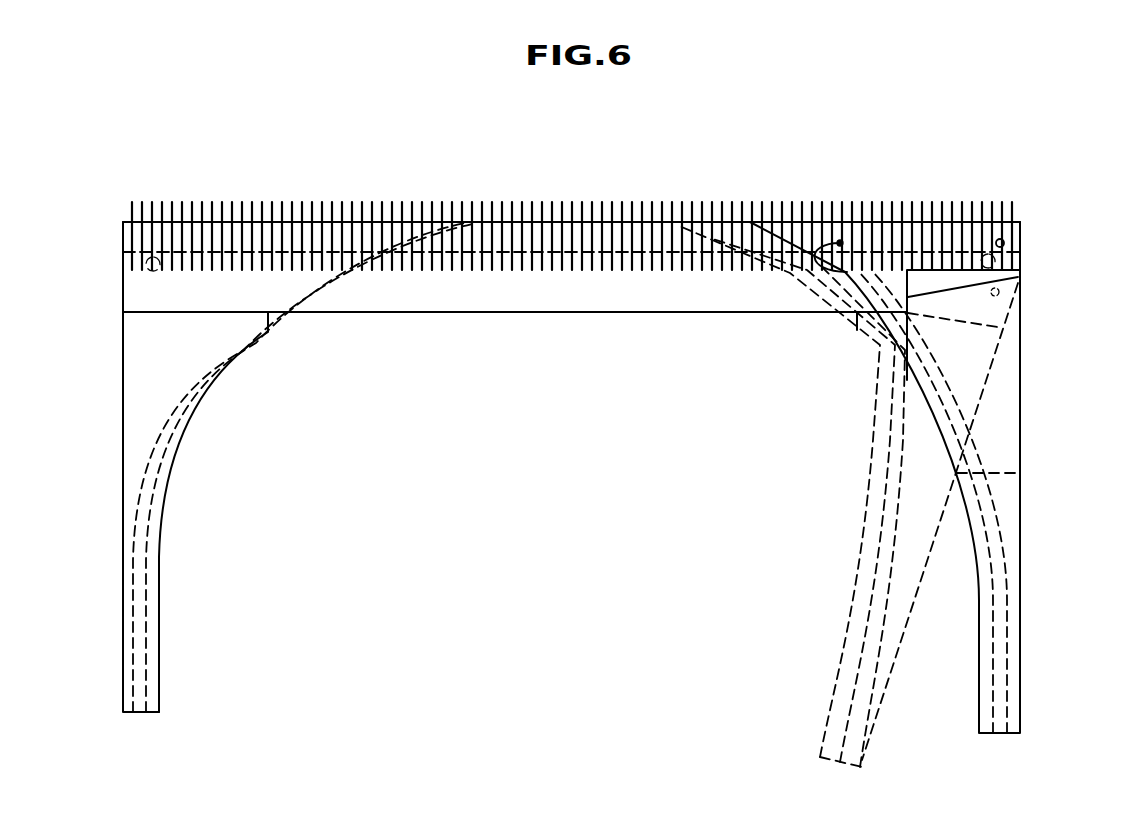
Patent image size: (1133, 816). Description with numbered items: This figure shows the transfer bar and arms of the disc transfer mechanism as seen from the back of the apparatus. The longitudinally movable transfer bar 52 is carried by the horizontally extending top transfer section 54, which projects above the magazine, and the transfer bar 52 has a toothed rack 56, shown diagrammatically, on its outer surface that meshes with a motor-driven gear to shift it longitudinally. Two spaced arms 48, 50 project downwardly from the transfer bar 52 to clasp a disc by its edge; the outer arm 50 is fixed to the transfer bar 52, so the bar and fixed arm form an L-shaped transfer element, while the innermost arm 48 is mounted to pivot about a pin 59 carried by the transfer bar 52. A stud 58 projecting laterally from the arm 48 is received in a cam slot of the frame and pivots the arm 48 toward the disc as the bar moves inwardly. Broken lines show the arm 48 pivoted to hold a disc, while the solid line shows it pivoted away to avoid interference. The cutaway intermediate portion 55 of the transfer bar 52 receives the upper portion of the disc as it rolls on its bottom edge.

The innermost arm 48 is at (963, 372).
The outer arm 50 is at (152, 375).
The transfer bar 52 is at (290, 287).
The top transfer section 54 is at (559, 194).
The cutaway intermediate portion 55 is at (585, 275).
The toothed rack 56 is at (612, 236).
The stud 58 is at (1003, 240).
The pin 59 is at (840, 243).